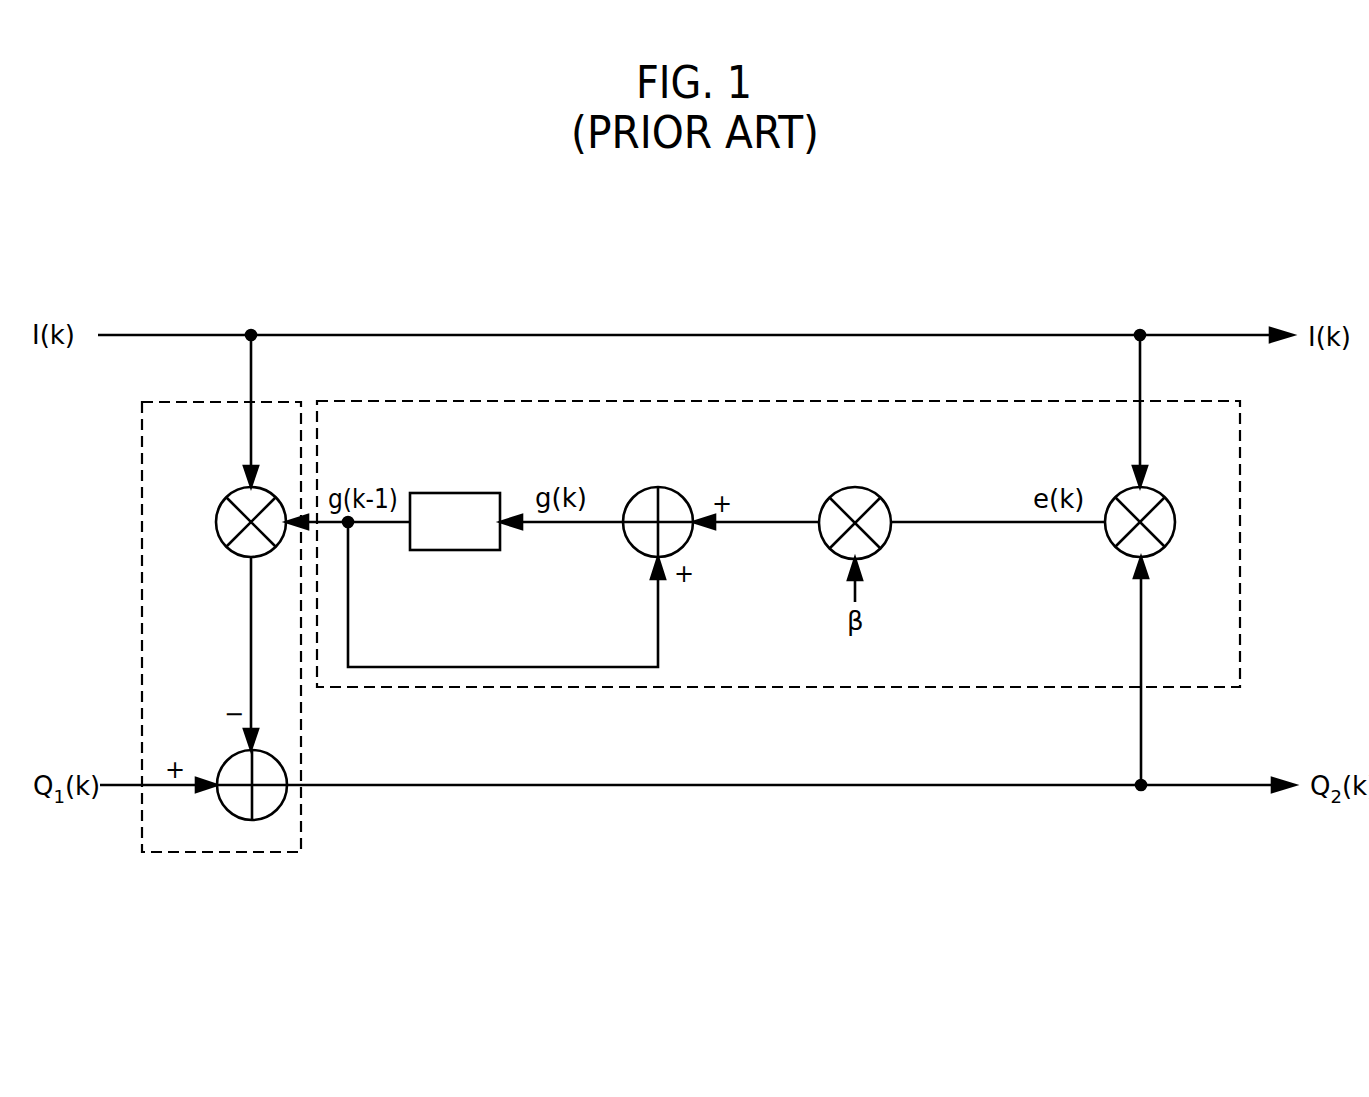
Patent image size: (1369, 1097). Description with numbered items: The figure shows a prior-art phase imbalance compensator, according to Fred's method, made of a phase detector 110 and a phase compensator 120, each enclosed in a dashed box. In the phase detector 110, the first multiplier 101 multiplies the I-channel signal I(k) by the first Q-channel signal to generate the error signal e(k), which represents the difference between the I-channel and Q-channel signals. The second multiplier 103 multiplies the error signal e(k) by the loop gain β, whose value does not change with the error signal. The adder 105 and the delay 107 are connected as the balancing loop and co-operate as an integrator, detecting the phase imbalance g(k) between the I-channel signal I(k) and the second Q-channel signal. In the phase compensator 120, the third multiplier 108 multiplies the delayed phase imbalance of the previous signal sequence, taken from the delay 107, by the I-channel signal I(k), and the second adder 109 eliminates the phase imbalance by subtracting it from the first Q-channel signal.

The first multiplier 101 is at (1165, 497).
The second multiplier 103 is at (853, 487).
The adder 105 is at (664, 488).
The delay 107 is at (445, 493).
The third multiplier 108 is at (220, 505).
The second adder 109 is at (228, 758).
The phase detector 110 is at (1155, 401).
The phase compensator 120 is at (172, 401).